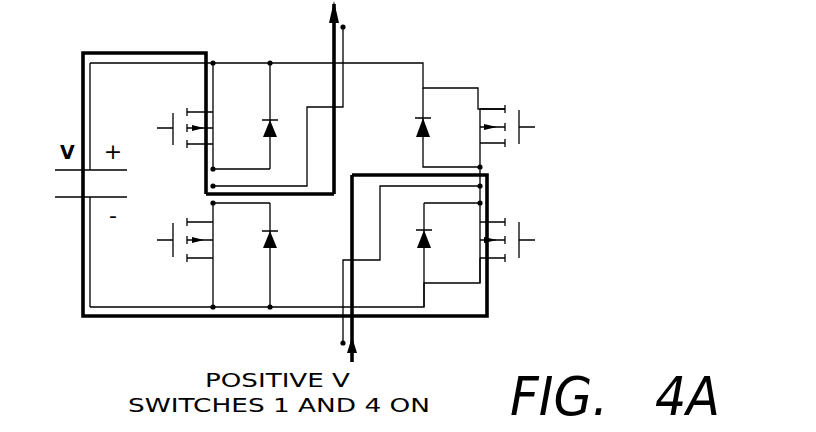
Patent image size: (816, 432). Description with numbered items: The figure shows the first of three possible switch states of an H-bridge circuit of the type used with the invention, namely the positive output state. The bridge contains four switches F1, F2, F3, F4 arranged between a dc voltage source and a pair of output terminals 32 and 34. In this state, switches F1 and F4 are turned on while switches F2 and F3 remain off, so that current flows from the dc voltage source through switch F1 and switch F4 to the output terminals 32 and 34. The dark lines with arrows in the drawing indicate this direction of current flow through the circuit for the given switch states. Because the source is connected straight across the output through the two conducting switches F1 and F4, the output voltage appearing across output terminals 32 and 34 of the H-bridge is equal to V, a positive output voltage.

The output terminal 32 is at (343, 27).
The output terminal 34 is at (343, 343).
The switch F1 is at (213, 120).
The switch F2 is at (509, 194).
The switch F3 is at (213, 255).
The switch F4 is at (509, 255).